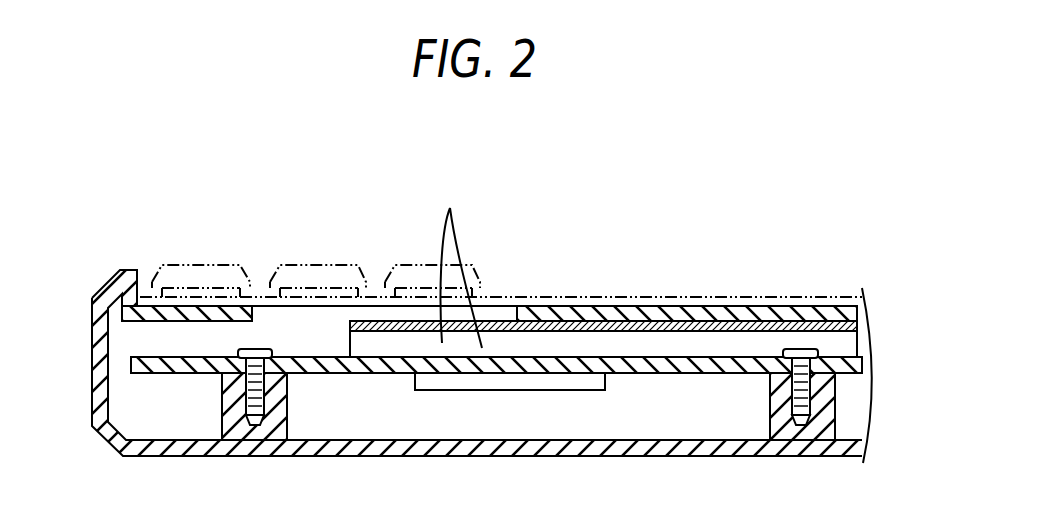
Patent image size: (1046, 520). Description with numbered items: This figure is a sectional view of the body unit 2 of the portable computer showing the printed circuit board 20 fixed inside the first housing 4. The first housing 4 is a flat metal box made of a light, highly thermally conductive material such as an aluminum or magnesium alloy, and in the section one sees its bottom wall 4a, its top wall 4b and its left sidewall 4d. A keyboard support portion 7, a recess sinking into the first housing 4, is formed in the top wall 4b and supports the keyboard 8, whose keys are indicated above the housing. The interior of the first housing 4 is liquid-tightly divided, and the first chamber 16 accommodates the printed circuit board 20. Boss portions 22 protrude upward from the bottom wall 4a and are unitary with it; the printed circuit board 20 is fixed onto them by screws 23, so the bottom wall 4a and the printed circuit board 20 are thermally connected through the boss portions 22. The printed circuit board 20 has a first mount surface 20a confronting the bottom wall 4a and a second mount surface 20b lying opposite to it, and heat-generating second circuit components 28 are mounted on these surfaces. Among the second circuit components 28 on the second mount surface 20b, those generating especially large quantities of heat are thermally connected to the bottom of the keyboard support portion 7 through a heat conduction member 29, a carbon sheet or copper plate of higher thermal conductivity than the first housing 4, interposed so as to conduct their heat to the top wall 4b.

The body unit 2 is at (78, 298).
The first housing 4 is at (437, 369).
The bottom wall 4a is at (522, 456).
The top wall 4b is at (124, 268).
The left sidewall 4d is at (92, 370).
The keyboard support portion 7 is at (137, 304).
The keyboard 8 is at (322, 272).
The first chamber 16 is at (722, 415).
The printed circuit board 20 is at (662, 376).
The first mount surface 20a is at (365, 375).
The second mount surface 20b is at (636, 354).
The boss portions 22 is at (222, 401).
The screws 23 is at (253, 348).
The second circuit components 28 is at (459, 264).
The heat conduction member 29 is at (567, 320).